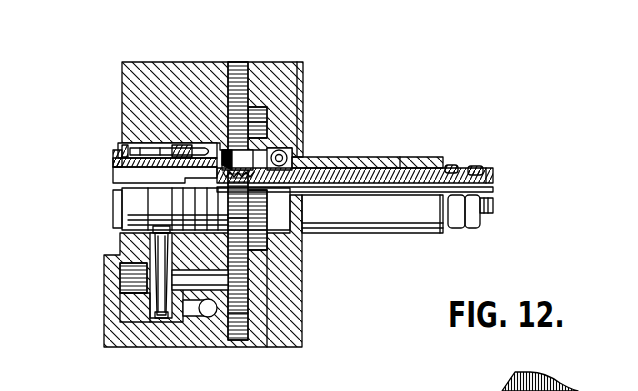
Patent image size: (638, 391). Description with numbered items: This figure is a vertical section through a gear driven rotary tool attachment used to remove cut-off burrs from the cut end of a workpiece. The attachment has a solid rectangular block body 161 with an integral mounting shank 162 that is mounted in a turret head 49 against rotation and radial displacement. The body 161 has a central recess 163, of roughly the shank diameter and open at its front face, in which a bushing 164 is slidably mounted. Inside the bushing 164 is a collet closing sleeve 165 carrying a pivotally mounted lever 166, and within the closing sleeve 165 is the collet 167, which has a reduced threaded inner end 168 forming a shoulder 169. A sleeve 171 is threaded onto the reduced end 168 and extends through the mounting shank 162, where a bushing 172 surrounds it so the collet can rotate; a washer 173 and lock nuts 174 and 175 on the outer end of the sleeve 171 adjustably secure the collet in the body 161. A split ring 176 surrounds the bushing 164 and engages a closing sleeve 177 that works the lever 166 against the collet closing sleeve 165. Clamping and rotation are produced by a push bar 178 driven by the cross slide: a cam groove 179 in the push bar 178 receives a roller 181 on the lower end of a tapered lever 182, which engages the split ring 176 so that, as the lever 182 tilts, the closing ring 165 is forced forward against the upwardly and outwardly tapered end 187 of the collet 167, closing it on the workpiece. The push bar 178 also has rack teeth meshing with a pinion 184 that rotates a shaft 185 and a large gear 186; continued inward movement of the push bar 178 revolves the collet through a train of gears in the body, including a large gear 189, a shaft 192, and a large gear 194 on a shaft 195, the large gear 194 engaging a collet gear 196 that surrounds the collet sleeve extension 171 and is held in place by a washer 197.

The body 161 is at (285, 270).
The mounting shank 162 is at (415, 222).
The central recess 163 is at (232, 140).
The bushing 164 is at (137, 205).
The collet closing sleeve 165 is at (117, 147).
The lever 166 is at (135, 150).
The collet 167 is at (117, 175).
The reduced threaded inner end 168 is at (300, 173).
The shoulder 169 is at (178, 150).
The sleeve 171 is at (358, 178).
The bushing 172 is at (407, 170).
The washer 173 is at (450, 165).
The lock nut 174 is at (462, 167).
The lock nut 175 is at (486, 174).
The split ring 176 is at (160, 208).
The closing sleeve 177 is at (150, 158).
The push bar 178 is at (112, 317).
The cam groove 179 is at (173, 320).
The roller 181 is at (157, 320).
The tapered lever 182 is at (160, 273).
The pinion 184 is at (128, 308).
The shaft 185 is at (220, 280).
The large gear 186 is at (240, 313).
The tapered end 187 is at (115, 160).
The large gear 189 is at (237, 218).
The shaft 192 is at (250, 145).
The large gear 194 is at (240, 72).
The shaft 195 is at (258, 112).
The collet gear 196 is at (262, 152).
The washer 197 is at (229, 156).
The turret head 49 is at (488, 390).